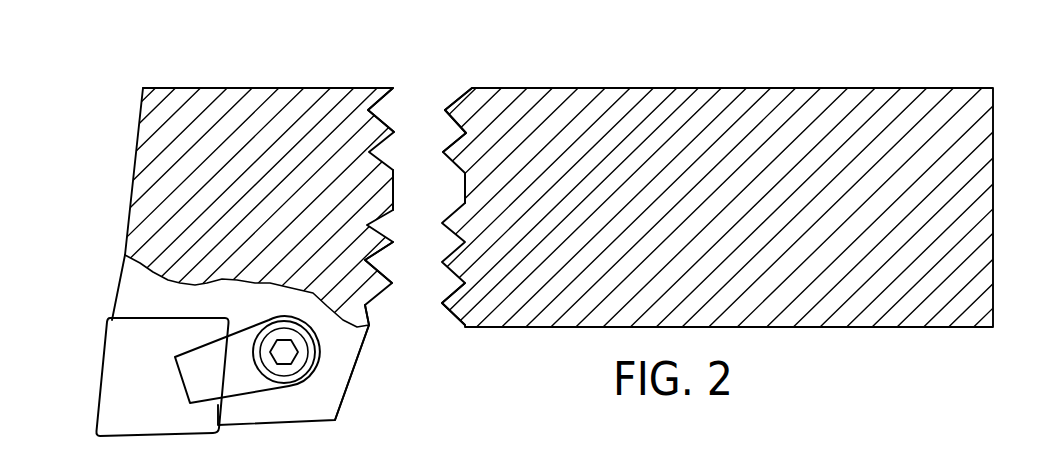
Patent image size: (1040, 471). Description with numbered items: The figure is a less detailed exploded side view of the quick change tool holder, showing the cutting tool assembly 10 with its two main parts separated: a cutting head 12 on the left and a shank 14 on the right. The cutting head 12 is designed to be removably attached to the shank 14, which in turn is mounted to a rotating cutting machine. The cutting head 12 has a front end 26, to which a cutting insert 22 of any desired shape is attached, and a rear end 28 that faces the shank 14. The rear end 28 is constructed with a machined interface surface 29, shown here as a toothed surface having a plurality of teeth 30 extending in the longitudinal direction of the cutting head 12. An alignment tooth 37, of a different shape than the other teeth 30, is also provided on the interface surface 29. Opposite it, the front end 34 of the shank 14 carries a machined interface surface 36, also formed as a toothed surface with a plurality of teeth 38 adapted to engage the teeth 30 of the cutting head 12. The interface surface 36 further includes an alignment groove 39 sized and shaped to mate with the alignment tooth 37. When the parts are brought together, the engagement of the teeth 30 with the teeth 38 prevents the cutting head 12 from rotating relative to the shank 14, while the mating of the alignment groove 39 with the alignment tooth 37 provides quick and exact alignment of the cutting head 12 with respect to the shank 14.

The cutting tool assembly 10 is at (636, 56).
The cutting head 12 is at (231, 84).
The shank 14 is at (841, 81).
The cutting insert 22 is at (105, 376).
The front end 26 is at (137, 136).
The rear end 28 is at (385, 86).
The interface surface 29 is at (384, 265).
The teeth 30 is at (369, 326).
The front end 34 is at (436, 314).
The interface surface 36 is at (458, 100).
The alignment tooth 37 is at (394, 187).
The teeth 38 is at (445, 112).
The alignment groove 39 is at (462, 187).